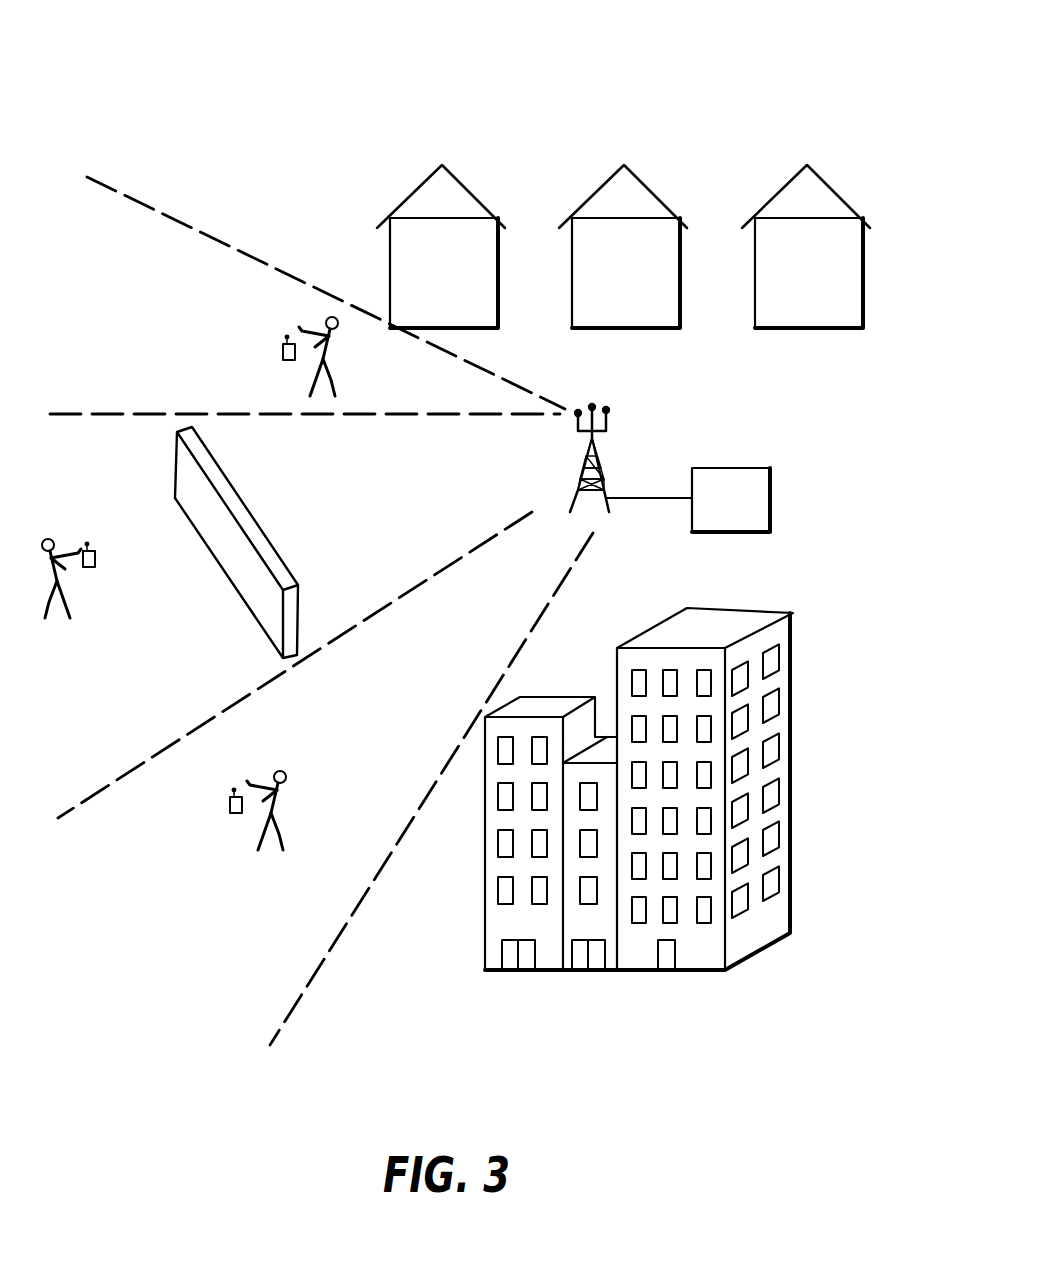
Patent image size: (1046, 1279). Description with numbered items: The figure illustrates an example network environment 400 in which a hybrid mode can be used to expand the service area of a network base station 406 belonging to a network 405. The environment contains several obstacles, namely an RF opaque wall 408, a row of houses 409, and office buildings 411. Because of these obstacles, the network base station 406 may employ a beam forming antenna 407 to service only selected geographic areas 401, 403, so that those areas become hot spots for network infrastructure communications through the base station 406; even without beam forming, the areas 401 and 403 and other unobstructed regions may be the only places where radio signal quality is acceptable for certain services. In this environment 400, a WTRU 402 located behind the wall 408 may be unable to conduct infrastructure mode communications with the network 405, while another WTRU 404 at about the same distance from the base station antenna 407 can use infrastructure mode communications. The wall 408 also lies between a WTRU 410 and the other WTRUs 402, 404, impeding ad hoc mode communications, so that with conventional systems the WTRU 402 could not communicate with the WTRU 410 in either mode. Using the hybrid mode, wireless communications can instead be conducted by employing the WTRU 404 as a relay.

The network environment 400 is at (181, 47).
The selected geographic area 401 is at (138, 318).
The WTRU 402 is at (97, 555).
The selected geographic area 403 is at (208, 923).
The WTRU 404 is at (228, 808).
The network 405 is at (771, 505).
The network base station 406 is at (605, 485).
The beam forming antenna 407 is at (604, 424).
The RF opaque wall 408 is at (247, 507).
The houses 409 is at (462, 182).
The WTRU 410 is at (282, 352).
The office buildings 411 is at (786, 778).